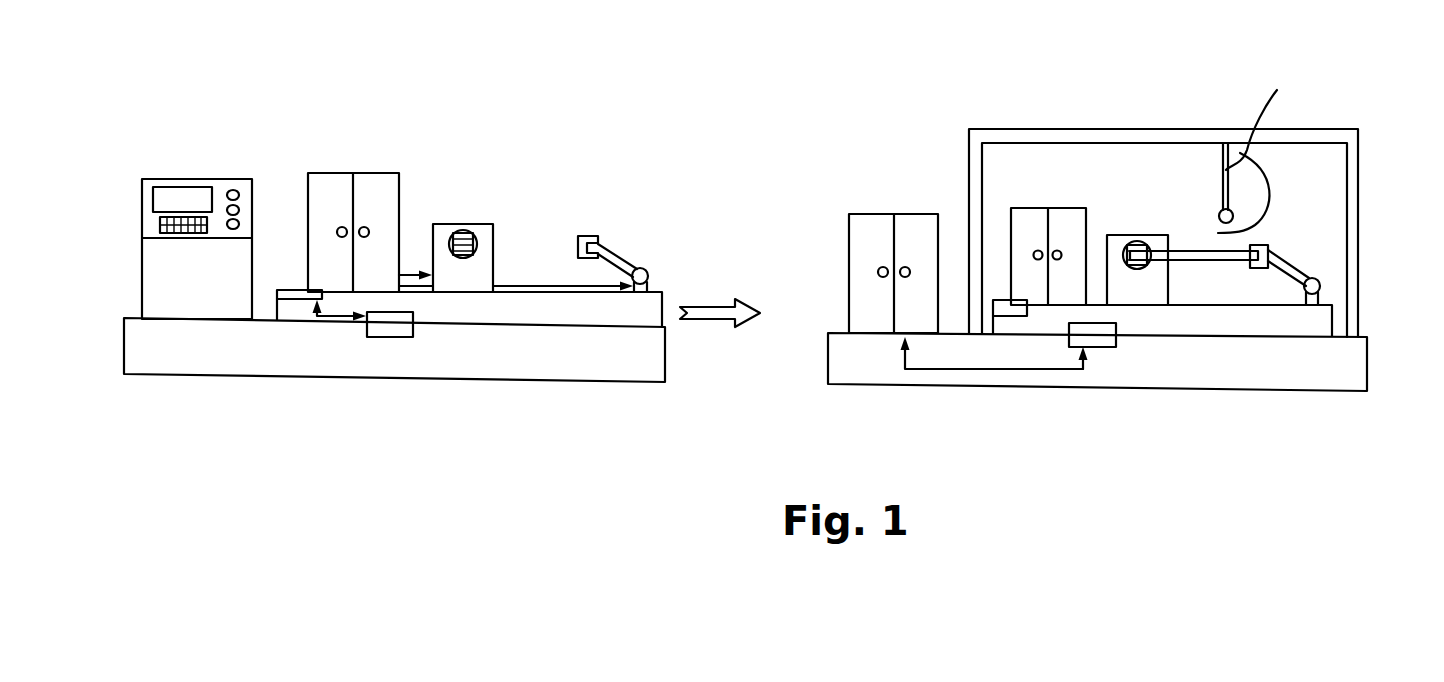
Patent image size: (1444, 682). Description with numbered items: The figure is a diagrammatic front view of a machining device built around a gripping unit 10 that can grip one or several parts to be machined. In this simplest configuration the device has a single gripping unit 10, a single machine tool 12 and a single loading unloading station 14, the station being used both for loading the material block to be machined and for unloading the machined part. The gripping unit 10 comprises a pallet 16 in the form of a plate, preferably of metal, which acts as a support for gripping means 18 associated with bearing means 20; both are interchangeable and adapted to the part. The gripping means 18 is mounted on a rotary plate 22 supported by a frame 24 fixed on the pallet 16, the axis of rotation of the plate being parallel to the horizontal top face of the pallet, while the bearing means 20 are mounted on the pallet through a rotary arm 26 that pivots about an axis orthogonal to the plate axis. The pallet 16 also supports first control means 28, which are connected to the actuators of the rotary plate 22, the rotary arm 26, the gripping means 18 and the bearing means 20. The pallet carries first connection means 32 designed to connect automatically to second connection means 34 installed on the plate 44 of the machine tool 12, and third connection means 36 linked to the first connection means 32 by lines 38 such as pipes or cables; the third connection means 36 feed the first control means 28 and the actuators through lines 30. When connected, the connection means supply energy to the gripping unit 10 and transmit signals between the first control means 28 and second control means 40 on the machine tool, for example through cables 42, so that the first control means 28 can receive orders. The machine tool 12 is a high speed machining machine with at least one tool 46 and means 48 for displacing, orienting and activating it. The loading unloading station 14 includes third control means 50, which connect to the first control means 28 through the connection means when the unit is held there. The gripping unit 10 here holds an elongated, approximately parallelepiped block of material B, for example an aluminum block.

The gripping unit 10 is at (526, 108).
The machine tool 12 is at (1031, 438).
The loading unloading station 14 is at (416, 420).
The pallet 16 is at (648, 310).
The gripping means 18 is at (462, 236).
The bearing means 20 is at (583, 236).
The rotary plate 22 is at (478, 247).
The frame 24 is at (478, 271).
The rotary arm 26 is at (620, 258).
The first control means 28 is at (337, 183).
The lines 30 is at (283, 278).
The first connection means 32 is at (410, 309).
The second connection means 34 is at (1107, 350).
The third connection means 36 is at (297, 299).
The lines 38 is at (335, 318).
The second control means 40 is at (875, 225).
The cables 42 is at (952, 370).
The plate 44 is at (1307, 375).
The tool 46 is at (1218, 232).
The tool displacing means 48 is at (1210, 138).
The third control means 50 is at (172, 197).
The block of material B is at (1185, 251).